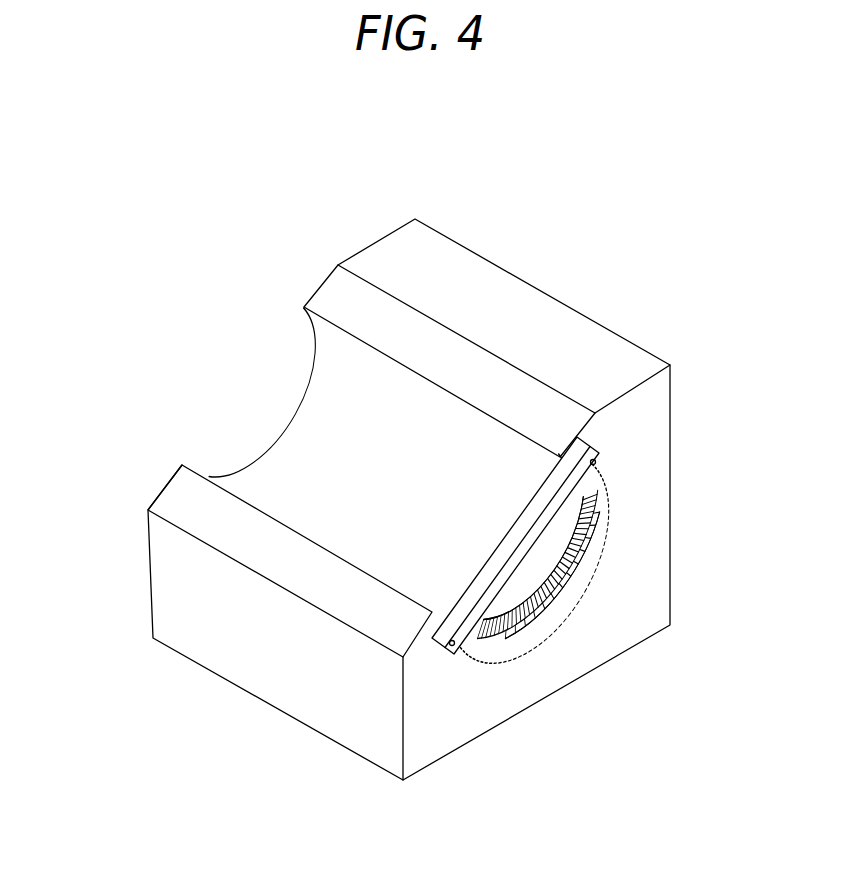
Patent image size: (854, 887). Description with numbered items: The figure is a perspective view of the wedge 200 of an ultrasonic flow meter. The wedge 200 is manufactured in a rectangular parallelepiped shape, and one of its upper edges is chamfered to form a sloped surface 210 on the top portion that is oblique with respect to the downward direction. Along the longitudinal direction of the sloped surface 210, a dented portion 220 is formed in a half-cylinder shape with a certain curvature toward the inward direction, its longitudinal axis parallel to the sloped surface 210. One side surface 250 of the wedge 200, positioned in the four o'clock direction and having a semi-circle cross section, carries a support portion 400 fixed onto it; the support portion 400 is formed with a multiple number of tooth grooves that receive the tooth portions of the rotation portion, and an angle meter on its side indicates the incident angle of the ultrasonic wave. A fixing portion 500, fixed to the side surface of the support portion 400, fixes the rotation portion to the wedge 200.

The wedge 200 is at (430, 499).
The sloped surface 210 is at (182, 501).
The dented portion 220 is at (303, 456).
The one side surface 250 is at (630, 558).
The support portion 400 is at (562, 605).
The fixing portion 500 is at (616, 450).